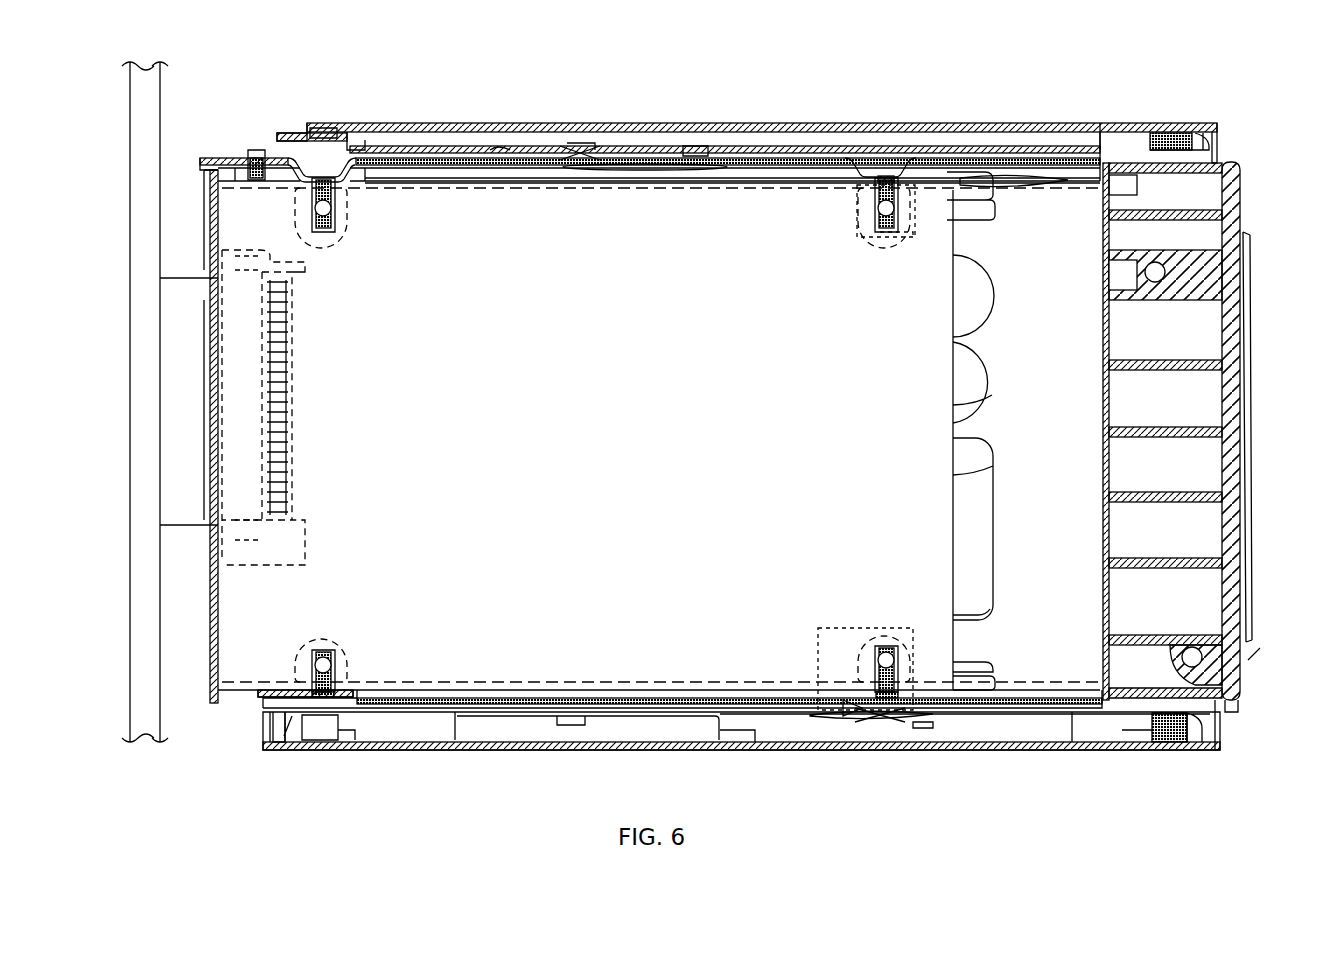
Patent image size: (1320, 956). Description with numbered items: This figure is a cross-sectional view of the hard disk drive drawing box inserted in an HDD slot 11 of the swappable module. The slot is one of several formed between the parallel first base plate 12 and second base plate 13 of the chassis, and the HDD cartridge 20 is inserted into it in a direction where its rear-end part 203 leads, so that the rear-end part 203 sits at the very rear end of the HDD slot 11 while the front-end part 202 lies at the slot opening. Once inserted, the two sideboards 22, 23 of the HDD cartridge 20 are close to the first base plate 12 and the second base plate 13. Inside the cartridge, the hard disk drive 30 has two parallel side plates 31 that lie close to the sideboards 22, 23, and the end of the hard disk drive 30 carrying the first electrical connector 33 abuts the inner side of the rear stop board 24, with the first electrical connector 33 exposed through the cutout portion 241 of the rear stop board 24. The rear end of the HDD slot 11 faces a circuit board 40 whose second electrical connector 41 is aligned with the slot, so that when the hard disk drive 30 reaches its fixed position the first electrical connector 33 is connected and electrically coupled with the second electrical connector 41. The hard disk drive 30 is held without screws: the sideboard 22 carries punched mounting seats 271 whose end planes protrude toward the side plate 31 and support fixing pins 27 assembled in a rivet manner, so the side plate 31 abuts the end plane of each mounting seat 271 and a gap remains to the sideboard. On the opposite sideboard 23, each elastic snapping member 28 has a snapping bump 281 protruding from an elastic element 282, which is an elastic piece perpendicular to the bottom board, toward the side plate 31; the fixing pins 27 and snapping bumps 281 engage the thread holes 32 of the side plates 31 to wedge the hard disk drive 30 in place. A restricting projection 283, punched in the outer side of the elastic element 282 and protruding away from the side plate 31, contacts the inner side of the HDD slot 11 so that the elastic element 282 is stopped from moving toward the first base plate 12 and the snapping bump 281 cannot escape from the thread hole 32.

The HDD slot 11 is at (1236, 158).
The first base plate 12 is at (845, 146).
The second base plate 13 is at (805, 706).
The HDD cartridge 20 is at (654, 146).
The front-end part 202 is at (1038, 148).
The rear-end part 203 is at (259, 148).
The sideboard 22 is at (713, 160).
The sideboard 23 is at (969, 702).
The rear stop board 24 is at (222, 601).
The cutout portion 241 is at (216, 548).
The fixing pin 27 is at (887, 172).
The mounting seat 271 is at (865, 170).
The elastic snapping member 28 is at (290, 712).
The snapping bump 281 is at (323, 700).
The elastic element 282 is at (272, 728).
The restricting projection 283 is at (843, 698).
The hard disk drive 30 is at (547, 210).
The side plate 31 is at (783, 178).
The thread hole 32 is at (332, 164).
The first electrical connector 33 is at (237, 300).
The circuit board 40 is at (160, 85).
The second electrical connector 41 is at (178, 284).